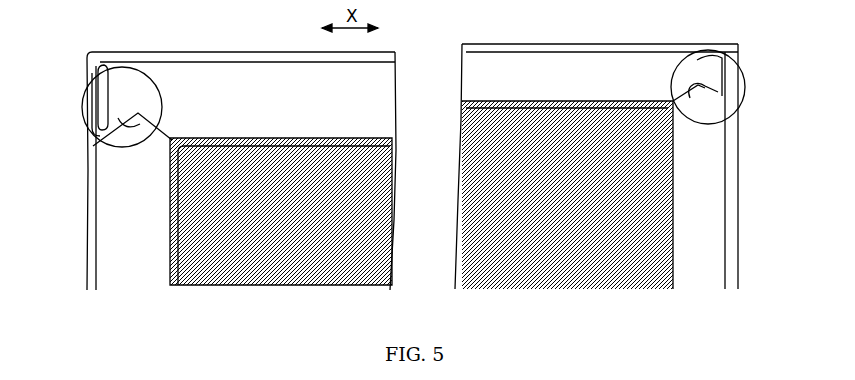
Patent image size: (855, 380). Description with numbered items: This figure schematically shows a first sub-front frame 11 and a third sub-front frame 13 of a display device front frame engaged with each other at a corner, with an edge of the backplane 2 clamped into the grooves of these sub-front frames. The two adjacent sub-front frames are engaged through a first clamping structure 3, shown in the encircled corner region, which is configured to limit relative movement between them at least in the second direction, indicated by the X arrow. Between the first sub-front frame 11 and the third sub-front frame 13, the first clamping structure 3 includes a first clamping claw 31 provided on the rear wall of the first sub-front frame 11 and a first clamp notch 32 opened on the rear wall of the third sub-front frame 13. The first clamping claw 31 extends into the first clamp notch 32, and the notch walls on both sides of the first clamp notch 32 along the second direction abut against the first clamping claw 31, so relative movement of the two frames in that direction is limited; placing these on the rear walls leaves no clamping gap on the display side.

The backplane 2 is at (337, 256).
The first clamping structure 3 is at (150, 76).
The first sub-front frame 11 is at (535, 62).
The third sub-front frame 13 is at (126, 230).
The first clamping claw 31 is at (93, 146).
The first clamp notch 32 is at (103, 106).